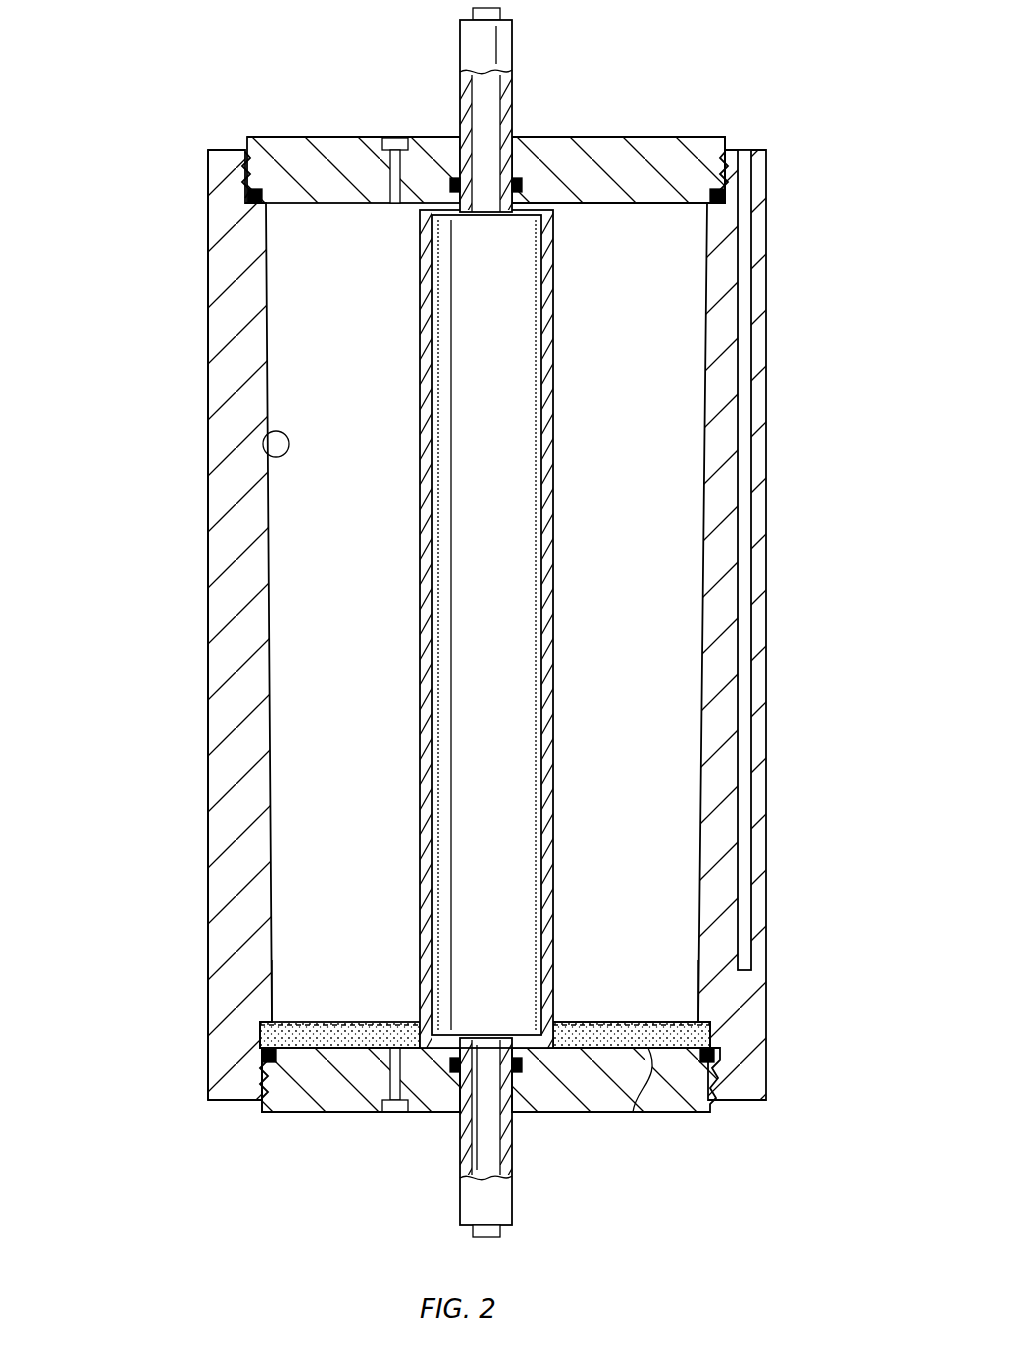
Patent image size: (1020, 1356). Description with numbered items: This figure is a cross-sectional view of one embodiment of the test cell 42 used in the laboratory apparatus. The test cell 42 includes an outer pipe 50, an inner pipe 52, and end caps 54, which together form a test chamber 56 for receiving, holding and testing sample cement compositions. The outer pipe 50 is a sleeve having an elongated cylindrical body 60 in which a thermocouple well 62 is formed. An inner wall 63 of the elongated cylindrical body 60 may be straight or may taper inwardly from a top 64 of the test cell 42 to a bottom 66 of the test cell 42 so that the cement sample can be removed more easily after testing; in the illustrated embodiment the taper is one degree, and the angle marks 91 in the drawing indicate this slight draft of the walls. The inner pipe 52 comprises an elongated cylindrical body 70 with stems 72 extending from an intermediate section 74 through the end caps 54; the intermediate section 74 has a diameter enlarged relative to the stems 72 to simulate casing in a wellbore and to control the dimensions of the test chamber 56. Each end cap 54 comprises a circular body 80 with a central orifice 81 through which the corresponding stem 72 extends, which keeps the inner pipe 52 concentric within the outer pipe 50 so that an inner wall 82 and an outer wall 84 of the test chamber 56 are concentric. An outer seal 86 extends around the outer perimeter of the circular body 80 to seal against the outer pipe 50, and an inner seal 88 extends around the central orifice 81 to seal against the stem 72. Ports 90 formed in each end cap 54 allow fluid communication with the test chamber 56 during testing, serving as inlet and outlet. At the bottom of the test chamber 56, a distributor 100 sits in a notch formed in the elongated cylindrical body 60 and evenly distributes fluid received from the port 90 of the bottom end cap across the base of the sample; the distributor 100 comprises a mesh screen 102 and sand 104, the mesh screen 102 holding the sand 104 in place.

The test cell 42 is at (146, 300).
The outer pipe 50 is at (450, 597).
The inner pipe 52 is at (482, 629).
The end caps 54 is at (508, 624).
The test chamber 56 is at (364, 628).
The elongated cylindrical body 60 is at (208, 676).
The thermocouple well 62 is at (745, 150).
The inner wall 63 is at (266, 440).
The top 64 is at (297, 100).
The bottom 66 is at (290, 1138).
The elongated cylindrical body 70 is at (420, 810).
The stems 72 is at (487, 622).
The intermediate section 74 is at (555, 466).
The circular body 80 is at (605, 145).
The central orifice 81 is at (462, 168).
The inner wall 82 is at (555, 766).
The outer wall 84 is at (707, 367).
The outer seal 86 is at (250, 196).
The inner seal 88 is at (516, 185).
The ports 90 is at (394, 140).
The draft angle 91 is at (347, 1020).
The distributor 100 is at (592, 988).
The mesh screen 102 is at (380, 1020).
The sand 104 is at (633, 1112).